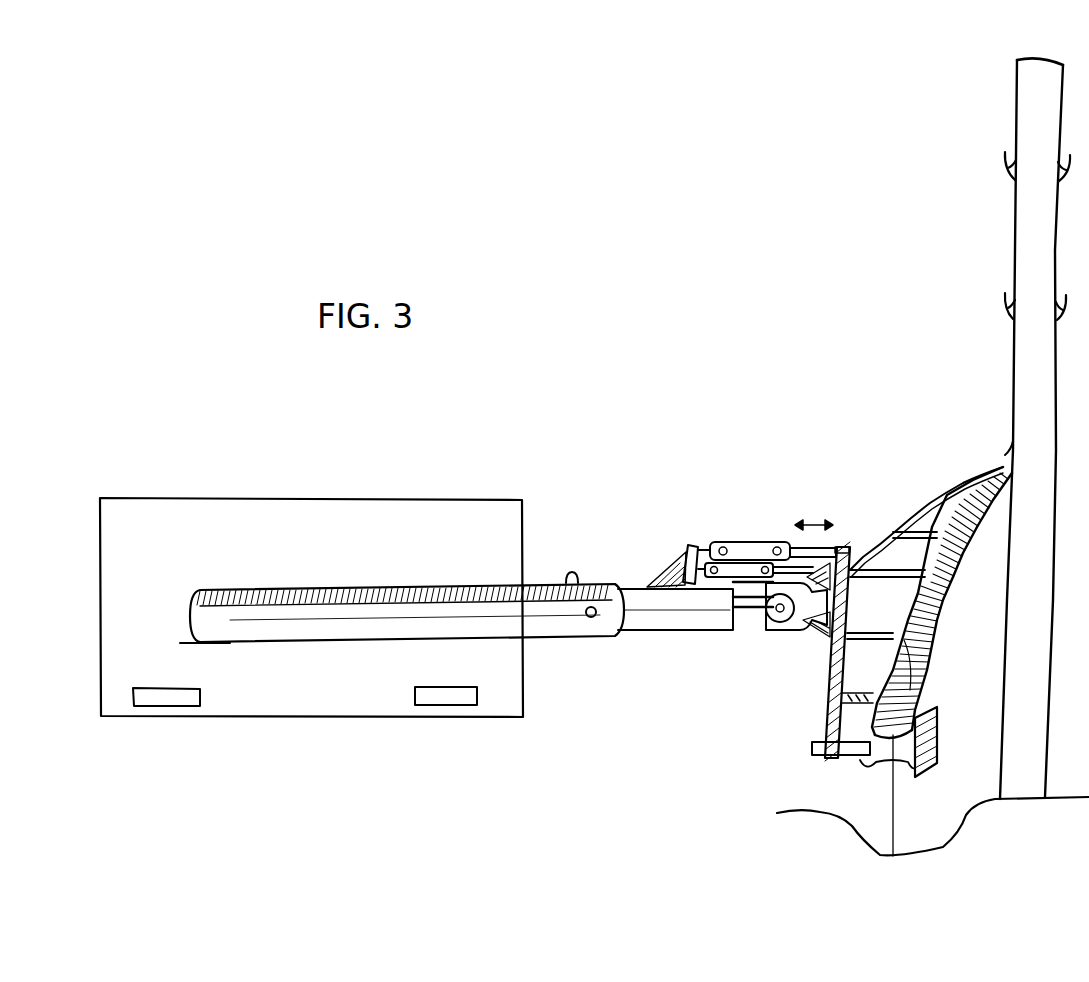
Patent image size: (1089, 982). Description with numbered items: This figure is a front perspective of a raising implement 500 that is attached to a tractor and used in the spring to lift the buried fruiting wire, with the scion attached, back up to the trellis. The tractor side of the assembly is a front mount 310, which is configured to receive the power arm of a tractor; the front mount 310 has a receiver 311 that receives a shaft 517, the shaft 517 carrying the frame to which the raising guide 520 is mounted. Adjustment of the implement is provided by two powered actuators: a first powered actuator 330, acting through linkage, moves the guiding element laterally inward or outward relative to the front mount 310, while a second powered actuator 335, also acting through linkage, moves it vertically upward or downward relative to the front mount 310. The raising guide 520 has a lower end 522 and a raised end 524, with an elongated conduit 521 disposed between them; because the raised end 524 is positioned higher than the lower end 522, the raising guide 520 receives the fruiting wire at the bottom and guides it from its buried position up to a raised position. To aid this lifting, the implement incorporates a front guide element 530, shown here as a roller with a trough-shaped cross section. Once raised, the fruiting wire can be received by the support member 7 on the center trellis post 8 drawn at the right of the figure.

The support member 7 is at (1005, 454).
The center trellis post 8 is at (1014, 373).
The front mount 310 is at (262, 498).
The receiver 311 is at (344, 645).
The first powered actuator 330 is at (750, 587).
The second powered actuator 335 is at (727, 543).
The raising implement 500 is at (829, 585).
The shaft 517 is at (647, 633).
The raising guide 520 is at (947, 593).
The elongated conduit 521 is at (930, 623).
The lower end 522 is at (923, 692).
The raised end 524 is at (981, 481).
The front guide element 530 is at (863, 742).